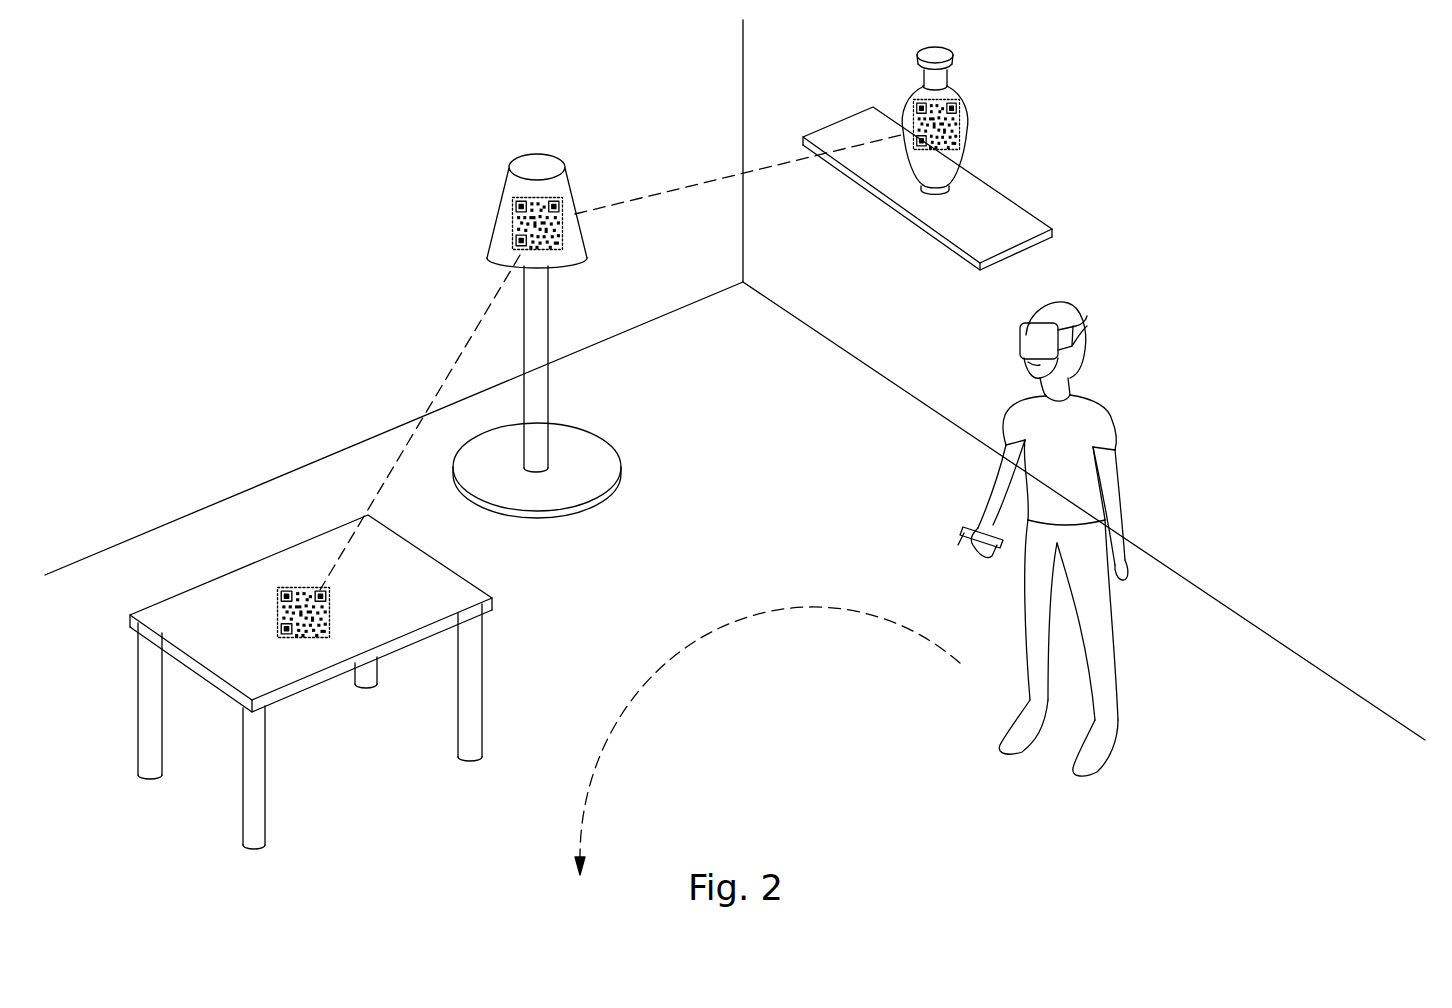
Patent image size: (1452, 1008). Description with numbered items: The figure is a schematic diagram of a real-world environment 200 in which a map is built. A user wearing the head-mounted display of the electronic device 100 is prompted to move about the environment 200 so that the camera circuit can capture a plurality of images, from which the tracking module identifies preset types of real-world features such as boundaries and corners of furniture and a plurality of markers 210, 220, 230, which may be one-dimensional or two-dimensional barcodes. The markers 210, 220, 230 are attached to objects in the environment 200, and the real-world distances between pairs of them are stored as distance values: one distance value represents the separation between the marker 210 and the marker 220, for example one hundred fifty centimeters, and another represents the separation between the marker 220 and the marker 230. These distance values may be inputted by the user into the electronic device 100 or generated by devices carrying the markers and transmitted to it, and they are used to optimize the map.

The real-world environment 200 is at (207, 83).
The electronic device 100 is at (1028, 340).
The marker 210 is at (960, 133).
The marker 220 is at (513, 212).
The marker 230 is at (303, 640).